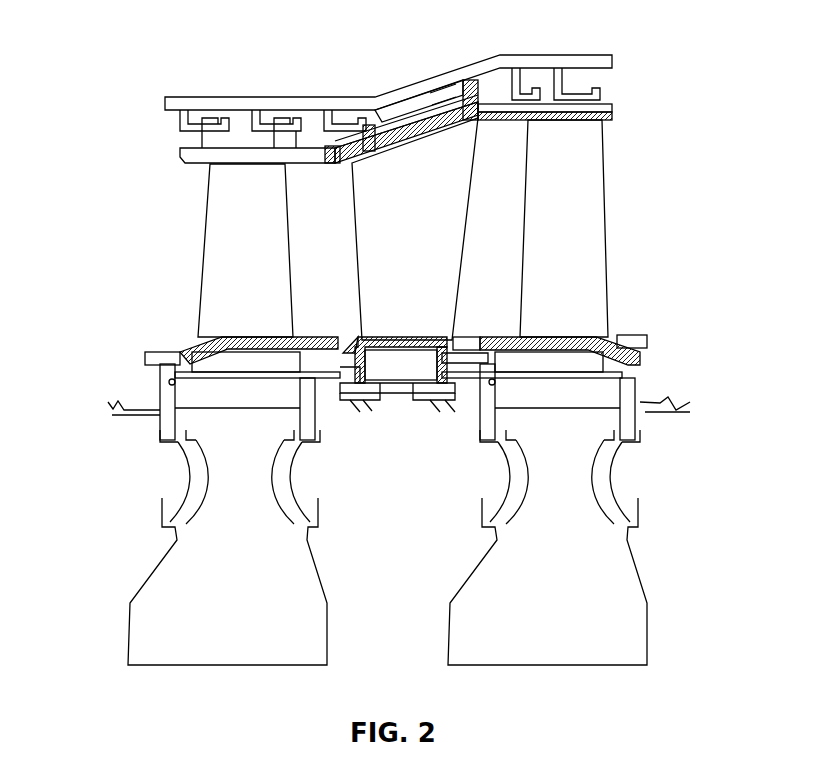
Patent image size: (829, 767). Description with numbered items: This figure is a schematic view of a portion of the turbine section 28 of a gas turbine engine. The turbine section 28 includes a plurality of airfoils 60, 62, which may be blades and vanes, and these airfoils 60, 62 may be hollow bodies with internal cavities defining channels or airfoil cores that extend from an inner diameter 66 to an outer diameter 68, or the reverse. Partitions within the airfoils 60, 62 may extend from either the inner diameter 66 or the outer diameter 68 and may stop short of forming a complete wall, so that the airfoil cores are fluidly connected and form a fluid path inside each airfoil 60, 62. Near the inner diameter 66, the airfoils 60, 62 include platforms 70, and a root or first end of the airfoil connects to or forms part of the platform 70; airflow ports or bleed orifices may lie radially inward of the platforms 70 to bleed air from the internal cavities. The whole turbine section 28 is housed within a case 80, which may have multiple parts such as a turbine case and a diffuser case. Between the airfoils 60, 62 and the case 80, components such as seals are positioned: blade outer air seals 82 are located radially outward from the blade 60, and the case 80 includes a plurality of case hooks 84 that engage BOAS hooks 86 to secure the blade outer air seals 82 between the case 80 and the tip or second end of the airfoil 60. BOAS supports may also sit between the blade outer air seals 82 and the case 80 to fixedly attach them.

The turbine section 28 is at (102, 58).
The airfoil 60 is at (278, 210).
The airfoil 62 is at (447, 190).
The inner diameter 66 is at (345, 336).
The outer diameter 68 is at (194, 178).
The platform 70 is at (465, 340).
The case 80 is at (410, 88).
The blade outer air seal 82 is at (262, 107).
The case hook 84 is at (297, 113).
The BOAS hook 86 is at (225, 104).